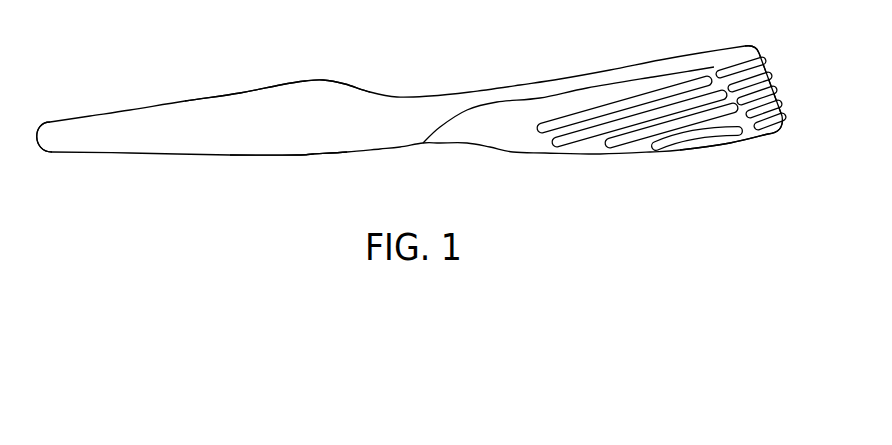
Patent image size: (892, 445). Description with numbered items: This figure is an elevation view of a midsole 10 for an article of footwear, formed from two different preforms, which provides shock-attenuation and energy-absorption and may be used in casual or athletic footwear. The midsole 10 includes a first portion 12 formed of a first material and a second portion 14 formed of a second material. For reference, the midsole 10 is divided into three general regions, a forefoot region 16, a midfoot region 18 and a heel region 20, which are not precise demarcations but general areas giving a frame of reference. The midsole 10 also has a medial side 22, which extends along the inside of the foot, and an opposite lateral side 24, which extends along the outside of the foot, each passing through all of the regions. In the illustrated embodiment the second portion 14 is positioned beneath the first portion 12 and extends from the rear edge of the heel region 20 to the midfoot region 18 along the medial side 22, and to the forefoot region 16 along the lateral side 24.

The midsole 10 is at (459, 55).
The first portion 12 is at (234, 108).
The second portion 14 is at (741, 130).
The forefoot region 16 is at (121, 143).
The midfoot region 18 is at (396, 130).
The heel region 20 is at (707, 80).
The medial side 22 is at (315, 140).
The lateral side 24 is at (307, 77).